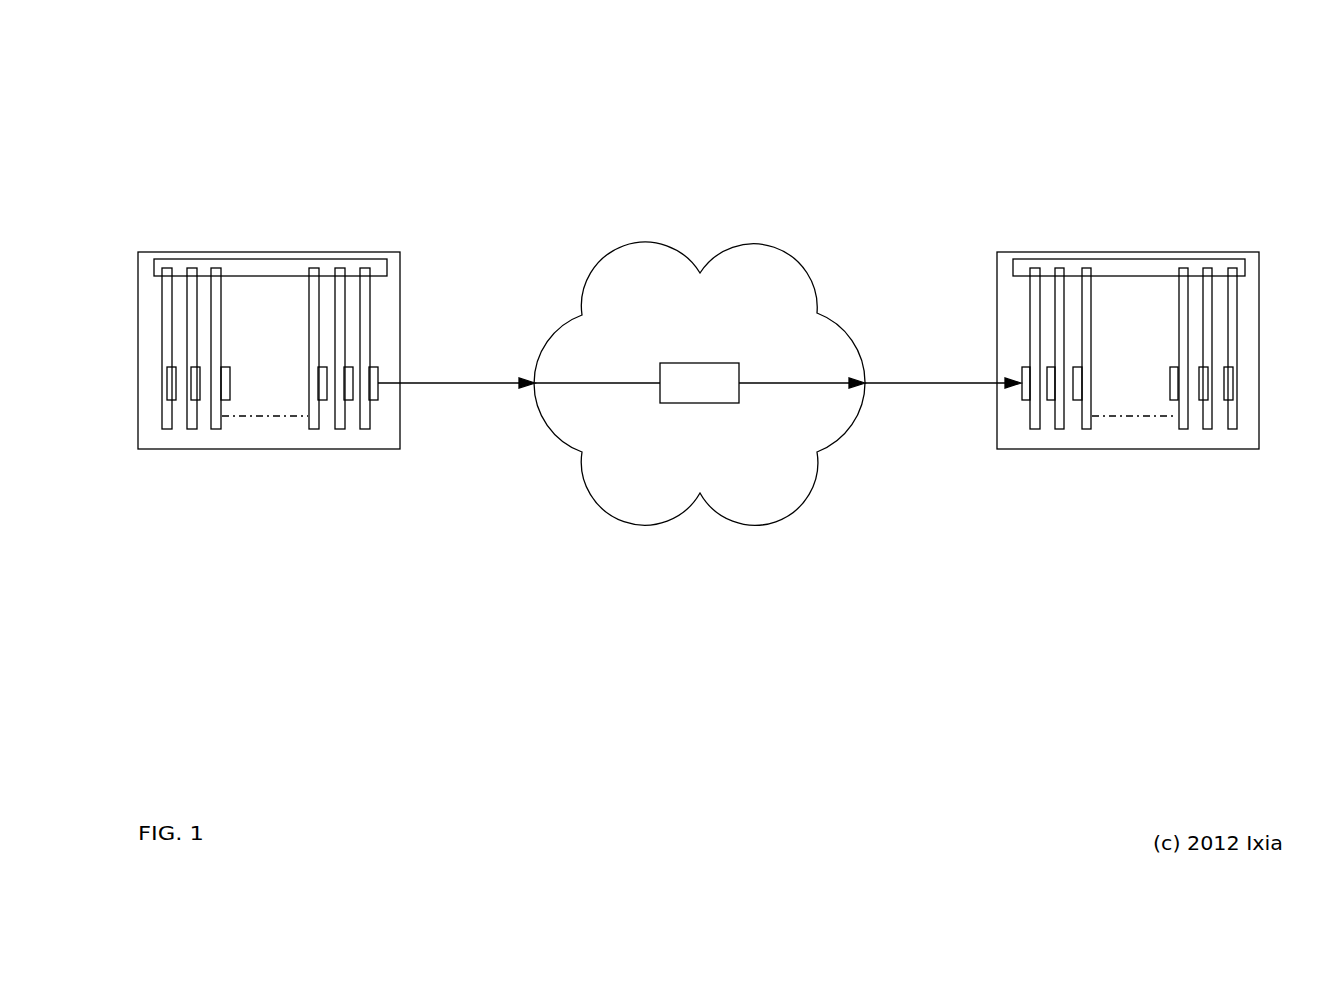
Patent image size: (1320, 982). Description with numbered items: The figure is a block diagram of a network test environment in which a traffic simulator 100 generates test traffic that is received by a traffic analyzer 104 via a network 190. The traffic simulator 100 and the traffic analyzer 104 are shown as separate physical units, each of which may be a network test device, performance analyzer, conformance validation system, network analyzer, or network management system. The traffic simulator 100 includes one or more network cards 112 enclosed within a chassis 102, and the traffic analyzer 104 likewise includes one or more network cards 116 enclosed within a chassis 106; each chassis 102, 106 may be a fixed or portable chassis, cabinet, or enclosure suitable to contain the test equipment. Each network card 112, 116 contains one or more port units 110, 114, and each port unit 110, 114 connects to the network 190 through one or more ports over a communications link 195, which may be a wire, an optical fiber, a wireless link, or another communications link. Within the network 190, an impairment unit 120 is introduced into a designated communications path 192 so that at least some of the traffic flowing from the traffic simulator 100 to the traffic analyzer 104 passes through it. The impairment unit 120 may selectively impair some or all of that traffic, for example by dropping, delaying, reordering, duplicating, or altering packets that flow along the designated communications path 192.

The traffic simulator 100 is at (257, 123).
The chassis 102 is at (272, 250).
The traffic analyzer 104 is at (1123, 123).
The chassis 106 is at (1072, 250).
The port unit 110 is at (375, 400).
The network card 112 is at (365, 429).
The port unit 114 is at (1025, 400).
The network card 116 is at (1035, 429).
The impairment unit 120 is at (713, 362).
The network 190 is at (710, 336).
The designated communications path 192 is at (793, 383).
The communications link 195 is at (493, 382).